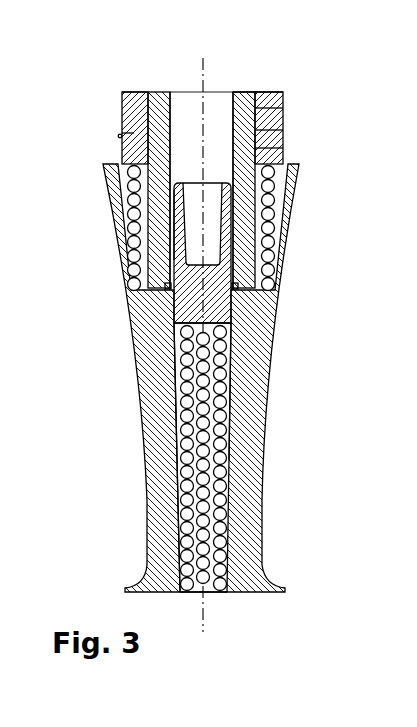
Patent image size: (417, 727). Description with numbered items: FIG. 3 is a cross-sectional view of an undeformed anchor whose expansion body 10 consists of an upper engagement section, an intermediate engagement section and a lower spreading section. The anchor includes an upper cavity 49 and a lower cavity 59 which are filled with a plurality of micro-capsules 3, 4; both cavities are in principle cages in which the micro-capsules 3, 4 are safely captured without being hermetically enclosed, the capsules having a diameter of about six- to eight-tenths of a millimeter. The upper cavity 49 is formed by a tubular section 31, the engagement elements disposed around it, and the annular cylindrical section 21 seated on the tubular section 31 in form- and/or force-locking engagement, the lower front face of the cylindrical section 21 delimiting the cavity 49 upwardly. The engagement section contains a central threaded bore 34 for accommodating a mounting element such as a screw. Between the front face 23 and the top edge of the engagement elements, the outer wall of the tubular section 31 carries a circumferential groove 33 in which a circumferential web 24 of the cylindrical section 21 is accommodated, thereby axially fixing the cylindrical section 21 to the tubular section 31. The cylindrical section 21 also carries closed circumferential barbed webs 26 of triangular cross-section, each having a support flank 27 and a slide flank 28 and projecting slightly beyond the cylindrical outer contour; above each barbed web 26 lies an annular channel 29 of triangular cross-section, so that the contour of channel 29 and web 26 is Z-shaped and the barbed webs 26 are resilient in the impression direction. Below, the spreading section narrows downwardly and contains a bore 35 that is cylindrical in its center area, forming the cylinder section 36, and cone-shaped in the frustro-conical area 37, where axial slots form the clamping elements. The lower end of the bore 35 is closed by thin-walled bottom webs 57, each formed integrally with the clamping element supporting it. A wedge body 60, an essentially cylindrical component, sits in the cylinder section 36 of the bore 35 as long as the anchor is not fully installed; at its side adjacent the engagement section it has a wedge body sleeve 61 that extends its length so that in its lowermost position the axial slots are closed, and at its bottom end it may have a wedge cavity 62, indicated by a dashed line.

The micro-capsule 3 is at (270, 184).
The micro-capsule 4 is at (270, 231).
The expansion body 10 is at (284, 333).
The cylindrical section 21 is at (262, 101).
The front face 23 is at (238, 93).
The circumferential web 24 is at (223, 120).
The barbed web 26 is at (122, 112).
The support flank 27 is at (74, 121).
The slide flank 28 is at (121, 136).
The annular channel 29 is at (122, 106).
The tubular section 31 is at (155, 182).
The circumferential groove 33 is at (258, 134).
The central threaded bore 34 is at (258, 153).
The bore 35 is at (165, 393).
The cylinder section 36 is at (178, 406).
The frustro-conical area 37 is at (181, 545).
The upper cavity 49 is at (133, 228).
The bottom web 57 is at (284, 600).
The lower cavity 59 is at (182, 488).
The wedge body 60 is at (122, 269).
The wedge body sleeve 61 is at (180, 236).
The wedge cavity 62 is at (175, 313).